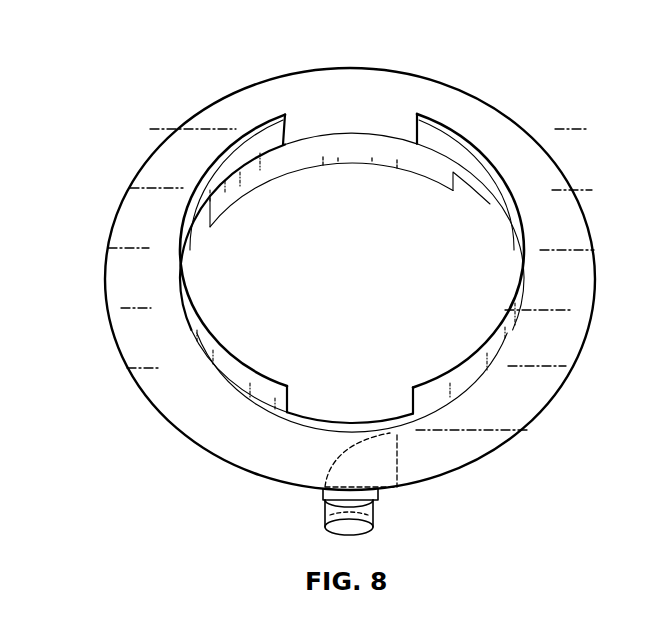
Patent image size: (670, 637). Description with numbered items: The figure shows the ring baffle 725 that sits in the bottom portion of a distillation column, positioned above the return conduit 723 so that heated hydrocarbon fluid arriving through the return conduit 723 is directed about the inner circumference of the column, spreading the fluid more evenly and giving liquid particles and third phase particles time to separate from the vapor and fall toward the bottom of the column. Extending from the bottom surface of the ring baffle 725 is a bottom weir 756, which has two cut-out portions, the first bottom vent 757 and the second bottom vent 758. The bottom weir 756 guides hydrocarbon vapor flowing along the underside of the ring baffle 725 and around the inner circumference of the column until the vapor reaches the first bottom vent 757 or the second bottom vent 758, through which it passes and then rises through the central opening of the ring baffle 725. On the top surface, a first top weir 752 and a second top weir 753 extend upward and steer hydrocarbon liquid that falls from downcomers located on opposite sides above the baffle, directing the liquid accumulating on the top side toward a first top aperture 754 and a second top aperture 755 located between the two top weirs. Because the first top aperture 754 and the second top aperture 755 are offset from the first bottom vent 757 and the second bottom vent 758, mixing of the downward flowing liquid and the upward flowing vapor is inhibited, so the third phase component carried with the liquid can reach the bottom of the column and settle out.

The return conduit 723 is at (377, 500).
The ring baffle 725 is at (155, 382).
The first top weir 752 is at (447, 123).
The second top weir 753 is at (263, 130).
The first top aperture 754 is at (397, 410).
The second top aperture 755 is at (348, 118).
The bottom weir 756 is at (348, 162).
The first bottom vent 757 is at (475, 198).
The second bottom vent 758 is at (203, 243).